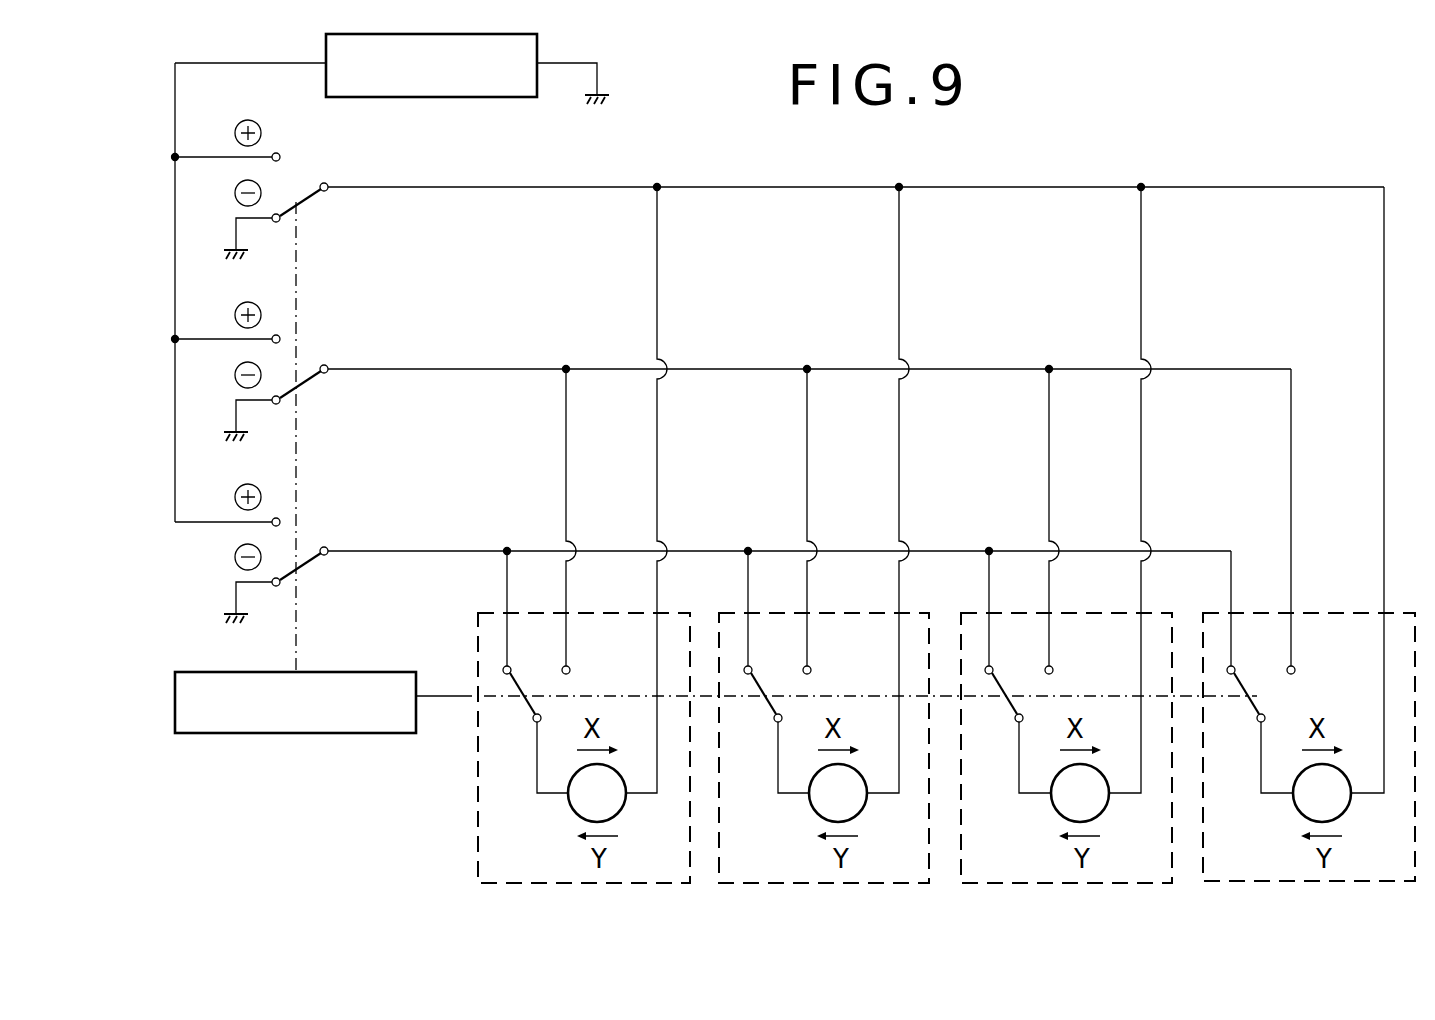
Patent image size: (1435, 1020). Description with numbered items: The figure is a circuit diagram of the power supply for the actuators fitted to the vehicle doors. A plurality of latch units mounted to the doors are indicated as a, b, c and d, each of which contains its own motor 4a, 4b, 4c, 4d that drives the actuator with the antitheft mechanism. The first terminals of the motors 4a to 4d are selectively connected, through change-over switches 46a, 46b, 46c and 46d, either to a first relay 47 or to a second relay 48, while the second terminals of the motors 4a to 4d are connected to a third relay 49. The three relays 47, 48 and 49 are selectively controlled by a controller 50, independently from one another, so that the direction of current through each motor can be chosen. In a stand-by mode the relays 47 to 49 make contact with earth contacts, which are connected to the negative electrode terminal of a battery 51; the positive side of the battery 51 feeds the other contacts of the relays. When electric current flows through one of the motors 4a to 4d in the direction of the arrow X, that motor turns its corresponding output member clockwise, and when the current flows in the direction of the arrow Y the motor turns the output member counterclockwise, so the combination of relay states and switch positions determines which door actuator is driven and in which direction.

The battery 51 is at (518, 87).
The third relay 49 is at (310, 197).
The second relay 48 is at (310, 379).
The first relay 47 is at (310, 561).
The controller 50 is at (392, 672).
The change-over switch 46a is at (527, 703).
The change-over switch 46b is at (773, 707).
The change-over switch 46c is at (1014, 707).
The change-over switch 46d is at (1257, 707).
The motor 4a is at (623, 808).
The motor 4b is at (863, 807).
The motor 4c is at (1105, 807).
The motor 4d is at (1347, 807).
The latch unit a is at (478, 833).
The latch unit b is at (726, 612).
The latch unit c is at (977, 612).
The latch unit d is at (1215, 612).